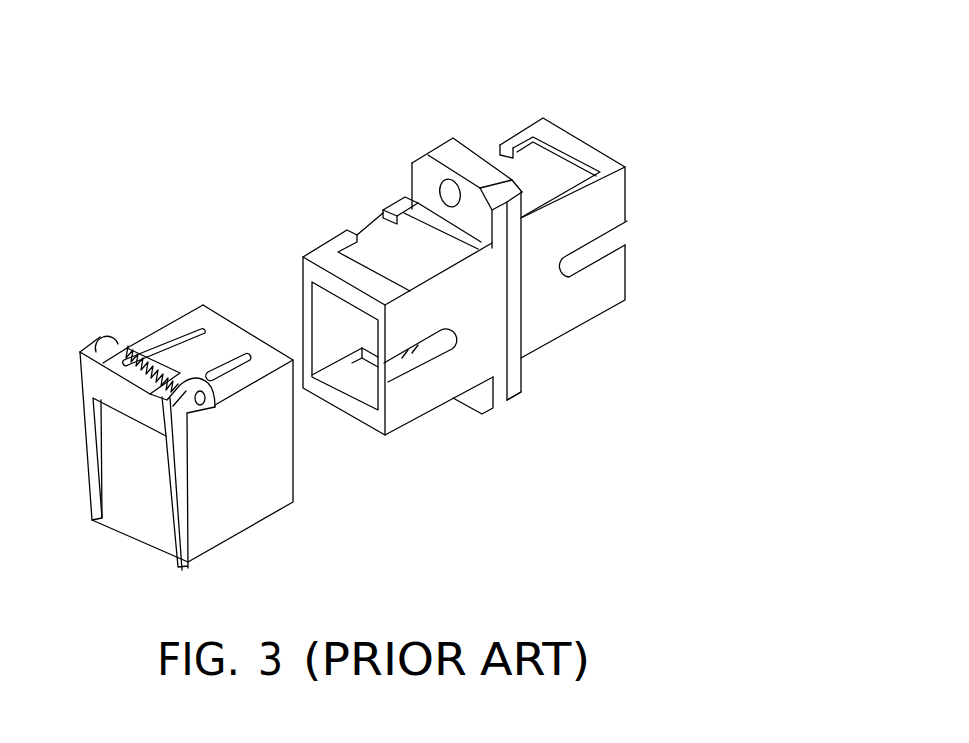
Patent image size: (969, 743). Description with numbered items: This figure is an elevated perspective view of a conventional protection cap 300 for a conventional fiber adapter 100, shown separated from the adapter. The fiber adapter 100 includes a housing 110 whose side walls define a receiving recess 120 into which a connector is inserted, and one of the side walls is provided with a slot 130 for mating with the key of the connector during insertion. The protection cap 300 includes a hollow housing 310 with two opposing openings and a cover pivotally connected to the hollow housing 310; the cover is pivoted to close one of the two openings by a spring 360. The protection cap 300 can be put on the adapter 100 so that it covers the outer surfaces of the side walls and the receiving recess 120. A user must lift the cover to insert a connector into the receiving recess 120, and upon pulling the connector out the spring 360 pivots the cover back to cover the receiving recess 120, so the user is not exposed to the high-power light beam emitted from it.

The fiber adapter 100 is at (553, 99).
The housing 110 is at (330, 229).
The receiving recess 120 is at (363, 370).
The slot 130 is at (403, 358).
The protection cap 300 is at (192, 239).
The hollow housing 310 is at (188, 322).
The spring 360 is at (150, 355).